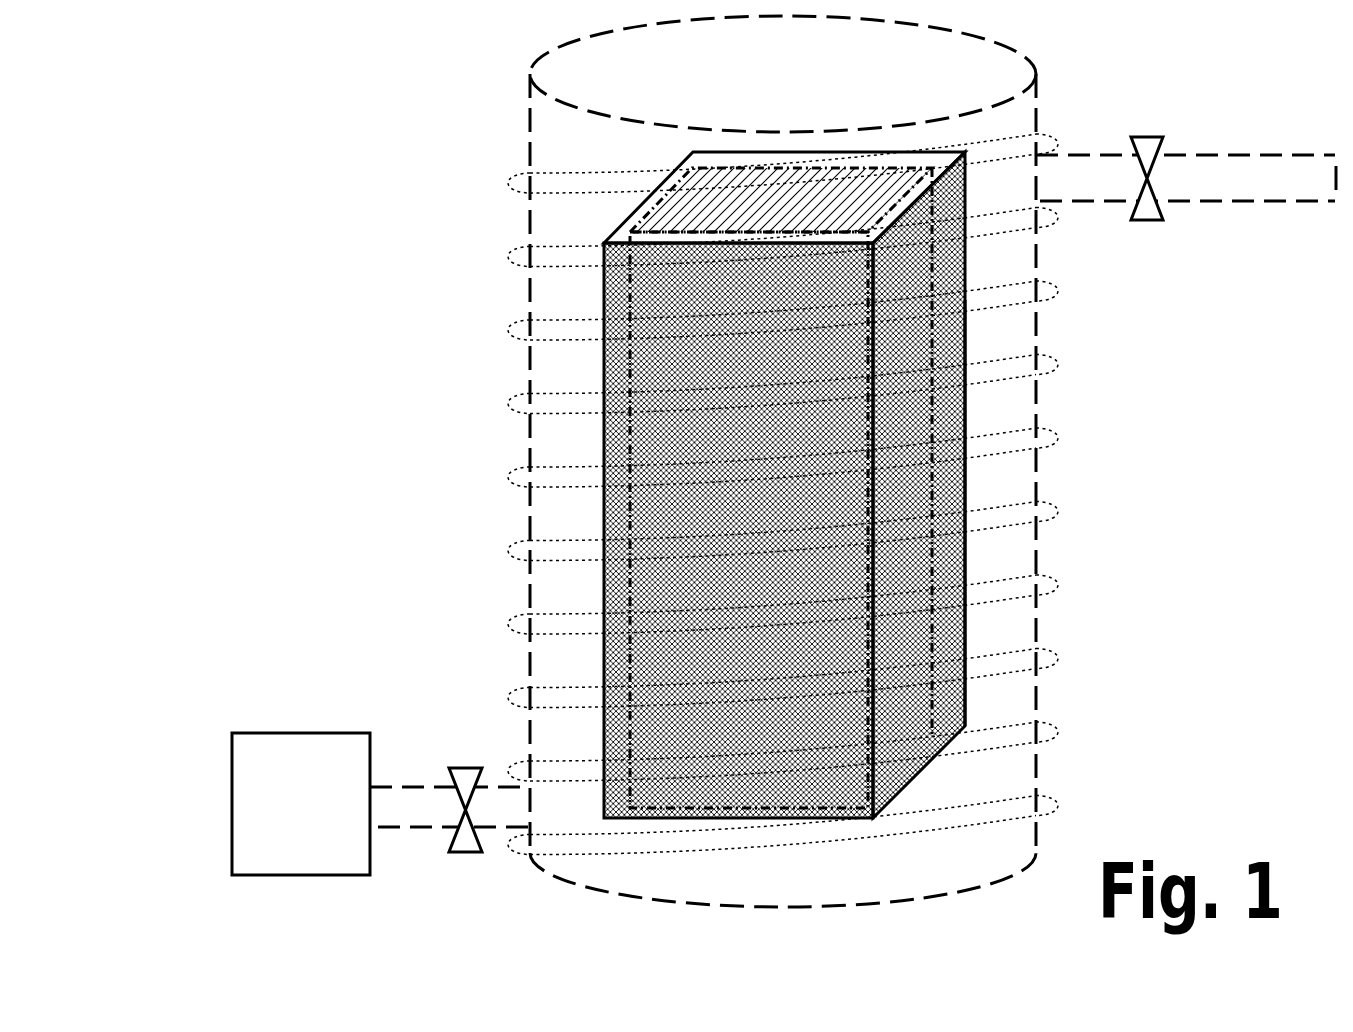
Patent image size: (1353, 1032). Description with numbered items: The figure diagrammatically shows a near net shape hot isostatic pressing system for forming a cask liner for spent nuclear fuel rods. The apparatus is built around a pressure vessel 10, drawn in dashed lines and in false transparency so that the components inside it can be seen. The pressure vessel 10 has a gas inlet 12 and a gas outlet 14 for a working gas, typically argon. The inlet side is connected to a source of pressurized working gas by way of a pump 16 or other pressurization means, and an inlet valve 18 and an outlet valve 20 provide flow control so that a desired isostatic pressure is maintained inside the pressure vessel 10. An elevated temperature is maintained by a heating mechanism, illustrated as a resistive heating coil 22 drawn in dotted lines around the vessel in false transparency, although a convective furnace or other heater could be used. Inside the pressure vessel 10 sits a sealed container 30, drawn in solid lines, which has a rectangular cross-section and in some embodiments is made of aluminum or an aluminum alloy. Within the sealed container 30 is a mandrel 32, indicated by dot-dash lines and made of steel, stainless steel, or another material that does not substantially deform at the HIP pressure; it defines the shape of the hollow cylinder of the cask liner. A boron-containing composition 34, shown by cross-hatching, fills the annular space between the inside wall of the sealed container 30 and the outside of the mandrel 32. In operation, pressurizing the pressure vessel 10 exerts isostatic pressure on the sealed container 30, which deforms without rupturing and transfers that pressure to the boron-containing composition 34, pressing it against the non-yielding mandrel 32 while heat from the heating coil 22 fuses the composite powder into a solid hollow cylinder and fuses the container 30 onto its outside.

The pressure vessel 10 is at (528, 128).
The gas inlet 12 is at (420, 787).
The gas outlet 14 is at (1248, 153).
The pump 16 is at (307, 737).
The inlet valve 18 is at (463, 765).
The outlet valve 20 is at (1148, 142).
The resistive heating coil 22 is at (575, 468).
The sealed container 30 is at (965, 484).
The mandrel 32 is at (932, 566).
The boron-containing composition 34 is at (950, 638).